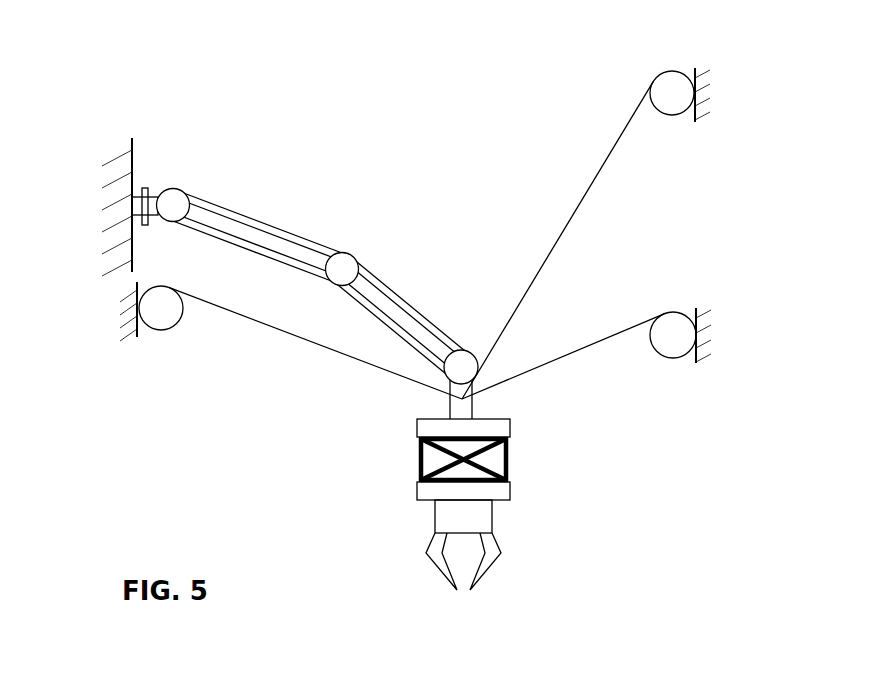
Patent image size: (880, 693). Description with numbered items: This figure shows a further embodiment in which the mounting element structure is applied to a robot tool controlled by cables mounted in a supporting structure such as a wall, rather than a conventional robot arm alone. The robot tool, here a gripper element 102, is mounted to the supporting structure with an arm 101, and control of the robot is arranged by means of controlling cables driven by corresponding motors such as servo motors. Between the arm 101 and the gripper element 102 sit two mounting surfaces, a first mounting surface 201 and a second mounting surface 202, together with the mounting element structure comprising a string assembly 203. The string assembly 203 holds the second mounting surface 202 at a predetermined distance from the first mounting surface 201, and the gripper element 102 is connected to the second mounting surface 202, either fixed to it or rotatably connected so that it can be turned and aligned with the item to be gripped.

The robot arm 101 is at (318, 287).
The gripper element 102 is at (515, 545).
The first mounting surface 201 is at (524, 429).
The second mounting surface 202 is at (521, 487).
The string assembly 203 is at (412, 459).